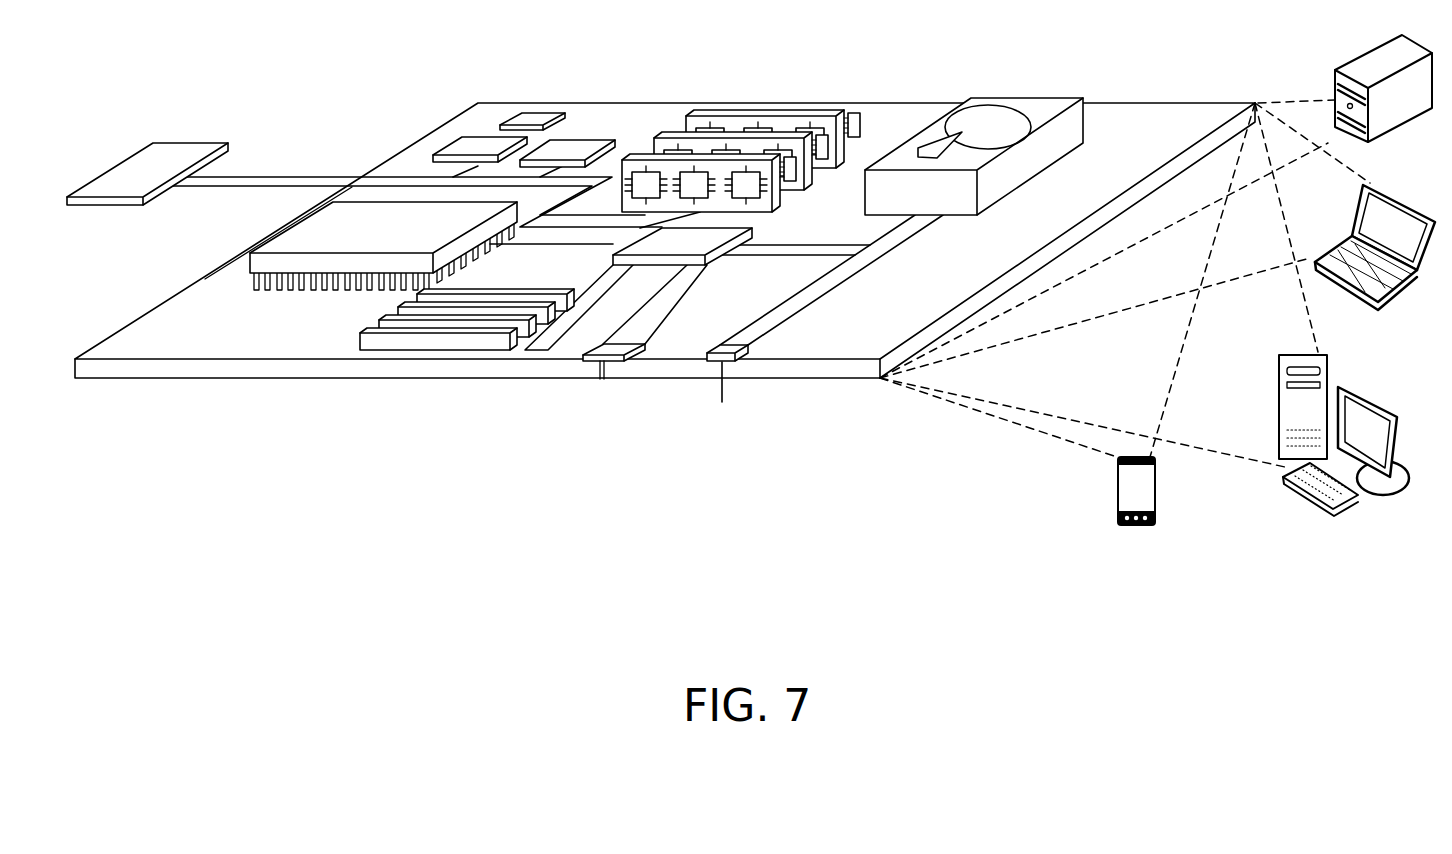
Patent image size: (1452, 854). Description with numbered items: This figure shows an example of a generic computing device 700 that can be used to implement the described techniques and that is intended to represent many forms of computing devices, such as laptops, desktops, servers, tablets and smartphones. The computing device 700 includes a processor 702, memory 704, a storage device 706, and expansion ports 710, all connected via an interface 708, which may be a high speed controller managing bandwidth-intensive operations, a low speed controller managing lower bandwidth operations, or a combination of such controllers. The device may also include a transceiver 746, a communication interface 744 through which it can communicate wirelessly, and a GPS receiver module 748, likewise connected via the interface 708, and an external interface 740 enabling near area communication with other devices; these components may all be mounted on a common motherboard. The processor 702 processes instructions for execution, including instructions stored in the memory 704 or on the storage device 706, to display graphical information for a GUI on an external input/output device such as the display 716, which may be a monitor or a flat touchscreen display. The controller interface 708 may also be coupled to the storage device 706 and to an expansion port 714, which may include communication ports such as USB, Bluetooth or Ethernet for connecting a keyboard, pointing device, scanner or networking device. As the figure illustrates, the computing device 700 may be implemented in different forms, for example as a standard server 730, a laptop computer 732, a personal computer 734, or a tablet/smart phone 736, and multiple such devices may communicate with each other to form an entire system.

The computing device 700 is at (386, 57).
The processor 702 is at (278, 232).
The memory 704 is at (768, 113).
The storage device 706 is at (1023, 97).
The interface 708 is at (618, 265).
The expansion ports 710 is at (387, 318).
The expansion port 714 is at (748, 352).
The display 716 is at (177, 157).
The standard server 730 is at (1357, 63).
The laptop computer 732 is at (1415, 196).
The personal computer 734 is at (1381, 387).
The tablet/smart phone 736 is at (1131, 524).
The external interface 740 is at (627, 343).
The communication interface 744 is at (480, 140).
The transceiver 746 is at (537, 115).
The GPS receiver module 748 is at (577, 140).